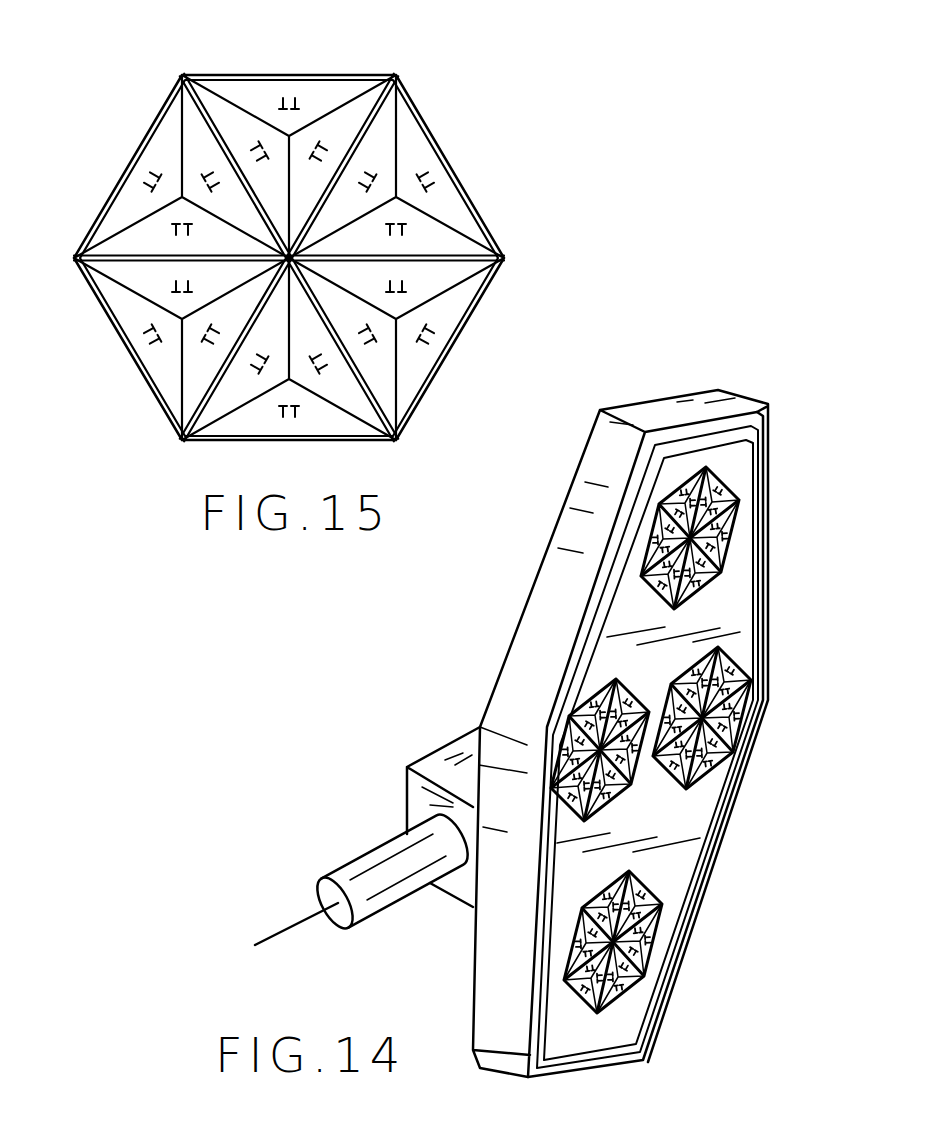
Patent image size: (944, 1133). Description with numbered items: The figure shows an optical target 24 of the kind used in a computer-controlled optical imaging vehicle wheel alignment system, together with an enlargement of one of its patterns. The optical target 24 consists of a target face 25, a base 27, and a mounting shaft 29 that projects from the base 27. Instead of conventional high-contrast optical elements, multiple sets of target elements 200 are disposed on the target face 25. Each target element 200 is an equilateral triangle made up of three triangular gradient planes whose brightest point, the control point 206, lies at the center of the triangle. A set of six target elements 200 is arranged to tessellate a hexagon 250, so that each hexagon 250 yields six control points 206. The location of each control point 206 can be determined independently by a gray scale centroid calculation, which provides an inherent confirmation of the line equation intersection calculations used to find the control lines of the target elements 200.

In FIG. 15, the target element 200 is at (128, 147).
In FIG. 15, the control point 206 is at (289, 136).
In FIG. 15, the hexagon 250 is at (518, 248).
In FIG. 14, the hexagon 250 is at (558, 733).
In FIG. 14, the optical target 24 is at (548, 617).
In FIG. 14, the target face 25 is at (670, 866).
In FIG. 14, the base 27 is at (440, 760).
In FIG. 14, the mounting shaft 29 is at (373, 880).